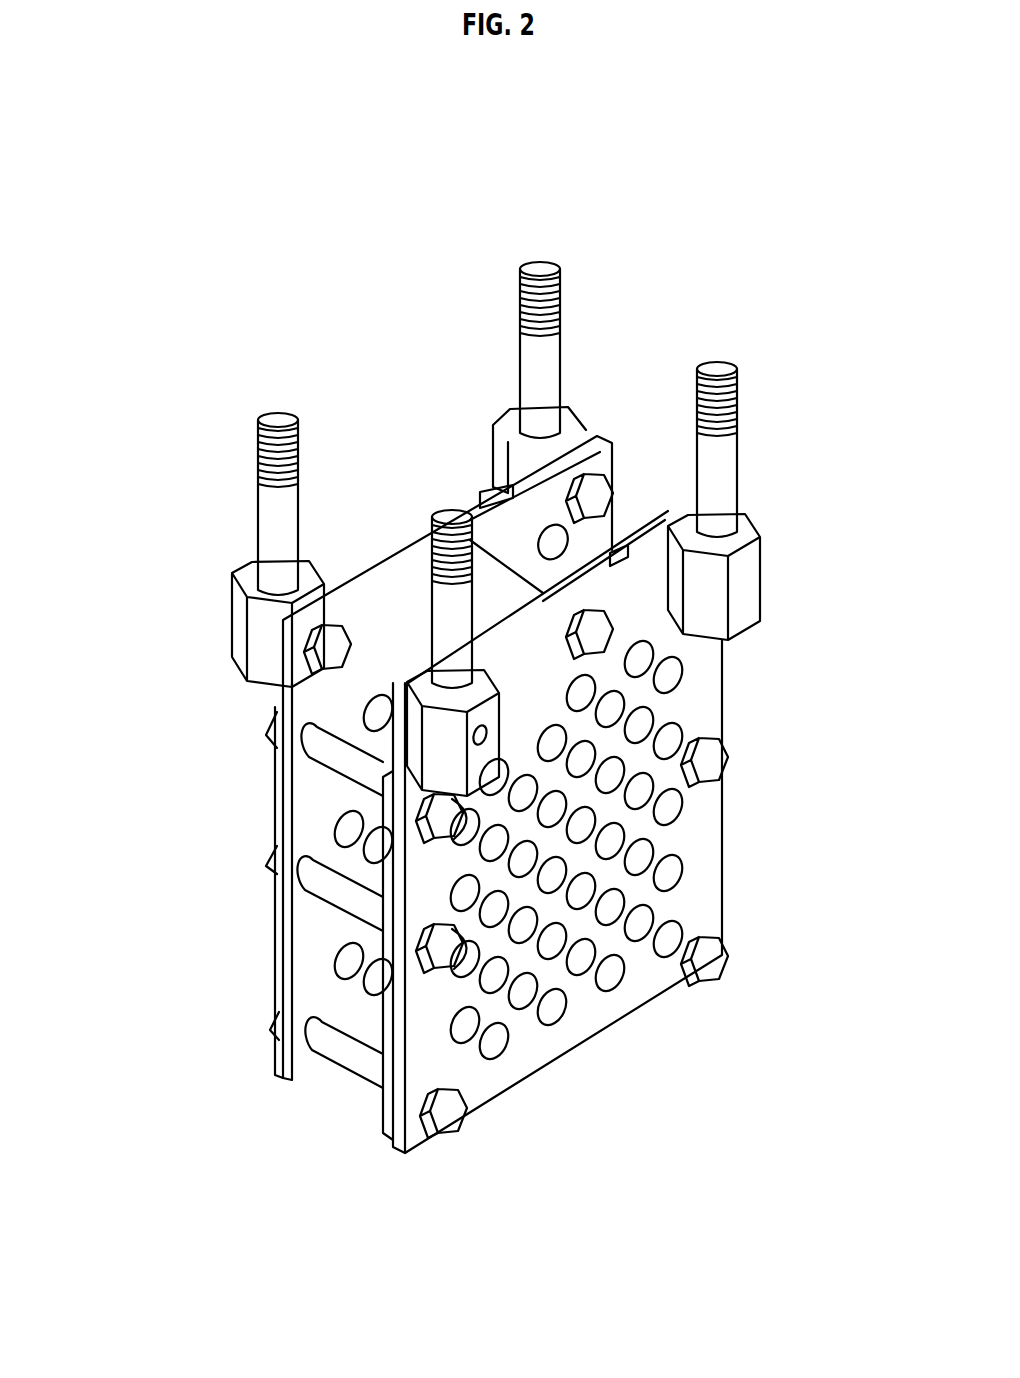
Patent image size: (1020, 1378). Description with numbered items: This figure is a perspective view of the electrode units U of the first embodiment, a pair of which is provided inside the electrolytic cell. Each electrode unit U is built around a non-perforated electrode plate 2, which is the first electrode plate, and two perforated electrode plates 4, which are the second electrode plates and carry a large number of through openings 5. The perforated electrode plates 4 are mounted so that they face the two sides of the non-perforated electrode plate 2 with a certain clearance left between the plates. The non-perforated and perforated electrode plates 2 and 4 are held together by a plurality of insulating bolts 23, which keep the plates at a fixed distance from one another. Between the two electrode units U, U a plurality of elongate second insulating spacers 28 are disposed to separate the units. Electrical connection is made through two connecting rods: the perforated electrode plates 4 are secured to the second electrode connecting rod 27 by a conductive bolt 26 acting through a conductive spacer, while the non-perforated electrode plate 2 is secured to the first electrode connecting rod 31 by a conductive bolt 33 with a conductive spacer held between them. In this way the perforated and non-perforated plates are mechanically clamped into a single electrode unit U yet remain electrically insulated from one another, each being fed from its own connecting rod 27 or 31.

The non-perforated electrode plate 2 is at (290, 1080).
The perforated electrode plate 4 is at (273, 1063).
The through opening 5 is at (350, 823).
The insulating bolt 23 is at (273, 1037).
The conductive bolt 26 is at (595, 466).
The second electrode connecting rod 27 is at (556, 332).
The second insulating spacer 28 is at (347, 1084).
The first electrode connecting rod 31 is at (253, 507).
The conductive bolt 33 is at (278, 684).
The electrode unit U is at (248, 890).